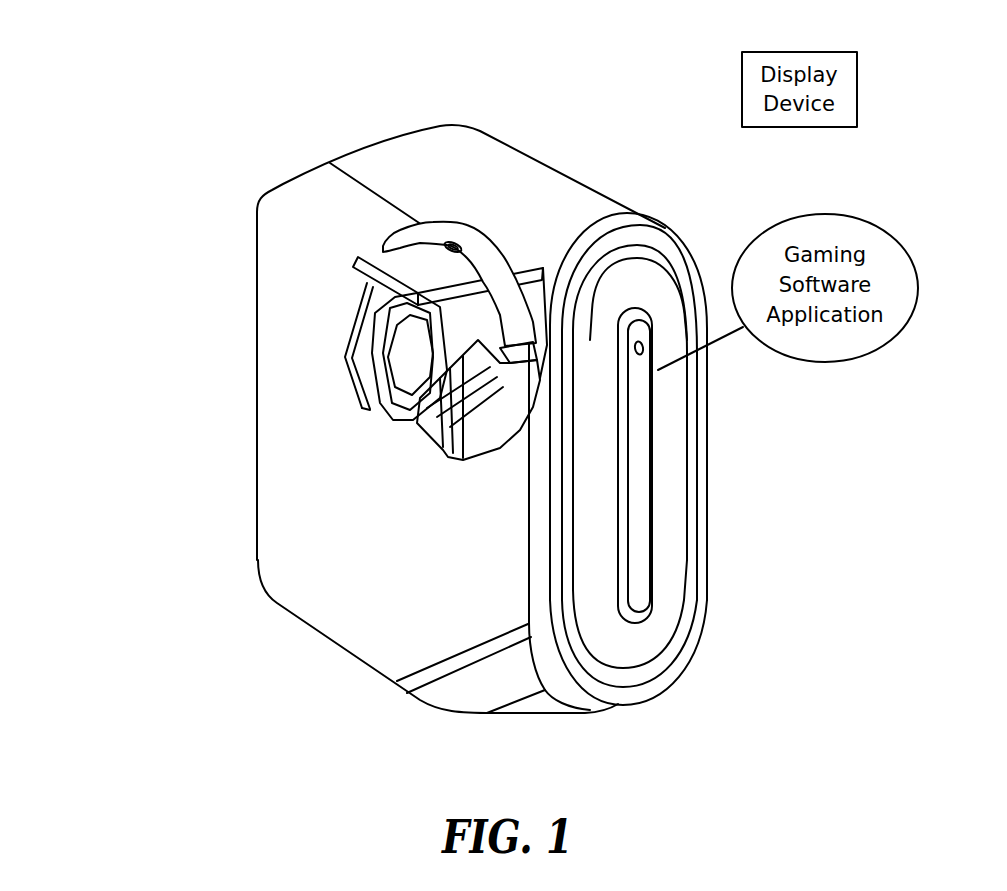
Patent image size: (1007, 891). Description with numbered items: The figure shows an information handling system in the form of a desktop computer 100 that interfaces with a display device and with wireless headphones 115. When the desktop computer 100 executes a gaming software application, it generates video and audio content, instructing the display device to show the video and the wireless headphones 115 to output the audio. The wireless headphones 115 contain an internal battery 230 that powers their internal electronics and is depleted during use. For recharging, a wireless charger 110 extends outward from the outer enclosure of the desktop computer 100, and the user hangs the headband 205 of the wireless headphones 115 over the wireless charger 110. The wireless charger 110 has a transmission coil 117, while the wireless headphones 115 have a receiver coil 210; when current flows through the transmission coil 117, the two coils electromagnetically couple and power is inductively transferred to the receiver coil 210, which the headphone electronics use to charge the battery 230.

The desktop computer 100 is at (176, 52).
The wireless charger 110 is at (422, 248).
The wireless headphones 115 is at (493, 240).
The transmission coil 117 is at (399, 264).
The headband 205 is at (456, 231).
The receiver coil 210 is at (462, 246).
The battery 230 is at (340, 362).